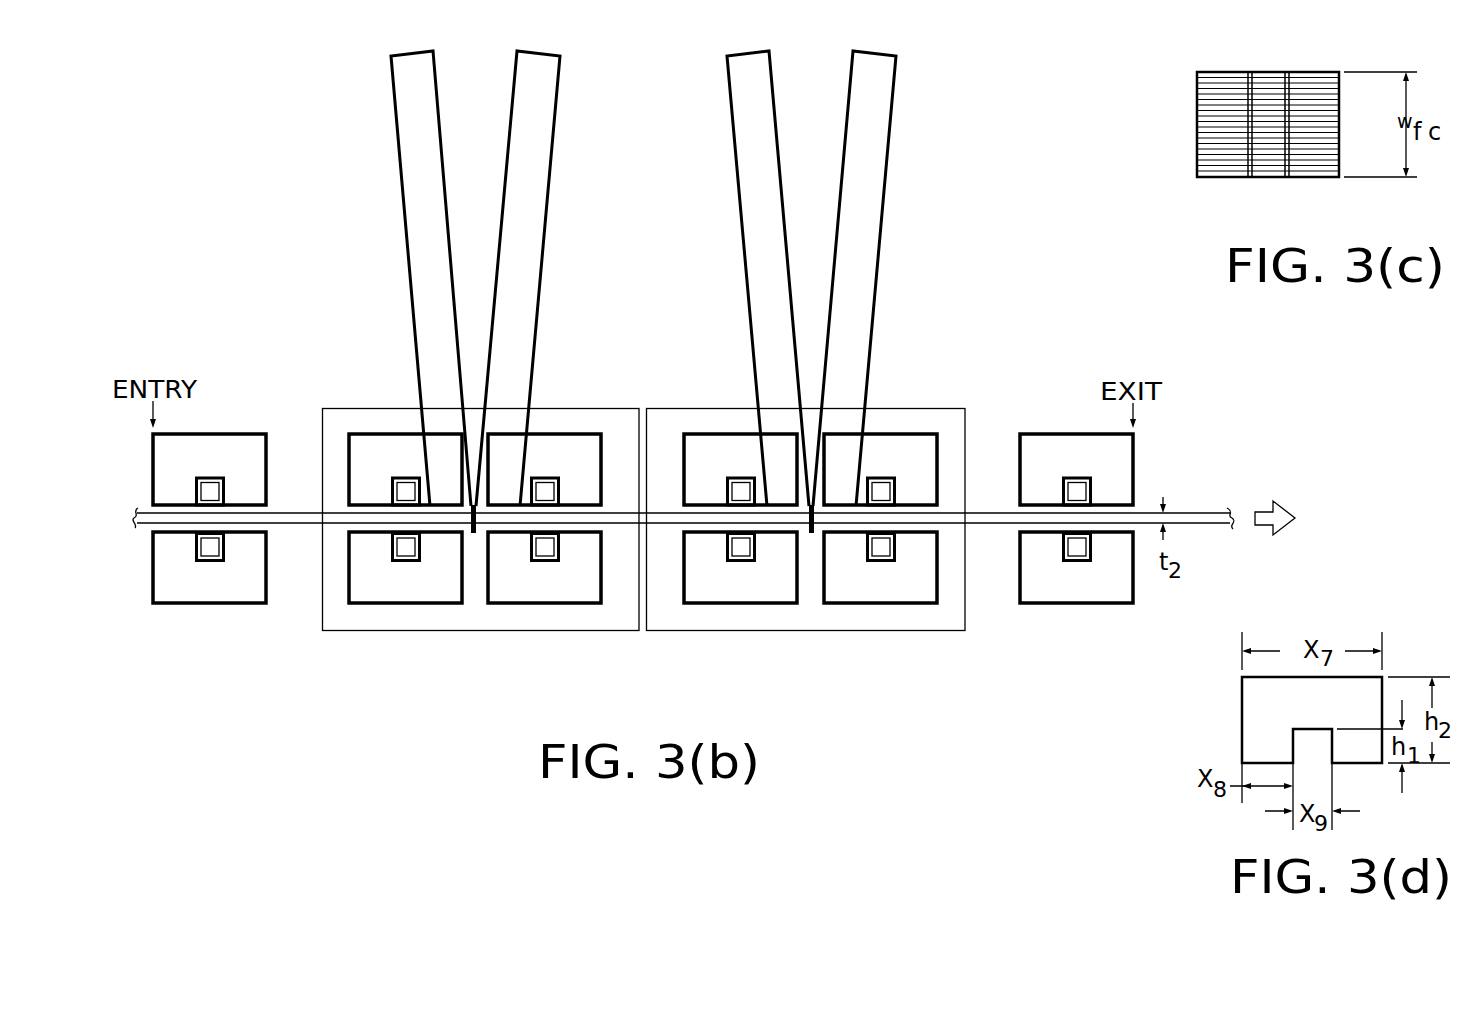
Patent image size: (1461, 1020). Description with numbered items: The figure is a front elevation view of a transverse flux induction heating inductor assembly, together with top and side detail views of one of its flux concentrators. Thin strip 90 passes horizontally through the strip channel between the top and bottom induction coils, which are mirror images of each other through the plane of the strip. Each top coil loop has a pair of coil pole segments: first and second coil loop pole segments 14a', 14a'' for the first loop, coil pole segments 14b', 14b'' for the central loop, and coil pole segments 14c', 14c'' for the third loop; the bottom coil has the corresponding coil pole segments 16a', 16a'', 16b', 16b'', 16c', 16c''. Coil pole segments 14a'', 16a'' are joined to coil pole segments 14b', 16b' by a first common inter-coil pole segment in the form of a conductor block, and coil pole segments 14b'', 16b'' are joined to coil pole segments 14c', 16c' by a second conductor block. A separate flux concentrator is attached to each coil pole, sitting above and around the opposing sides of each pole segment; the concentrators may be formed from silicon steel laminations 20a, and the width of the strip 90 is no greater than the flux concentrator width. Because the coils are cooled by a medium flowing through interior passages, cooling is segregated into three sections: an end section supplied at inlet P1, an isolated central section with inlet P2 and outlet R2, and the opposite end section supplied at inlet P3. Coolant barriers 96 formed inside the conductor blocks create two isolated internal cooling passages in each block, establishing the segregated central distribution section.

The silicon steel laminations 20a is at (1197, 139).
The thin strip 90 is at (1199, 513).
The coolant barrier 96 is at (475, 533).
The first coil loop pole segment 14a' is at (235, 444).
The second coil loop pole segment 14a'' is at (381, 425).
The coil pole segment 14b' is at (576, 425).
The coil pole segment 14b'' is at (719, 425).
The coil pole segment 14c' is at (922, 429).
The coil pole segment 14c'' is at (1059, 444).
The coil pole segment 16a' is at (211, 593).
The coil pole segment 16a'' is at (397, 612).
The coil pole segment 16b' is at (546, 612).
The coil pole segment 16b'' is at (732, 608).
The coil pole segment 16c' is at (883, 609).
The coil pole segment 16c'' is at (1090, 592).
The inlet P1 is at (411, 52).
The inlet P2 is at (540, 52).
The outlet R2 is at (748, 52).
The inlet P3 is at (875, 52).